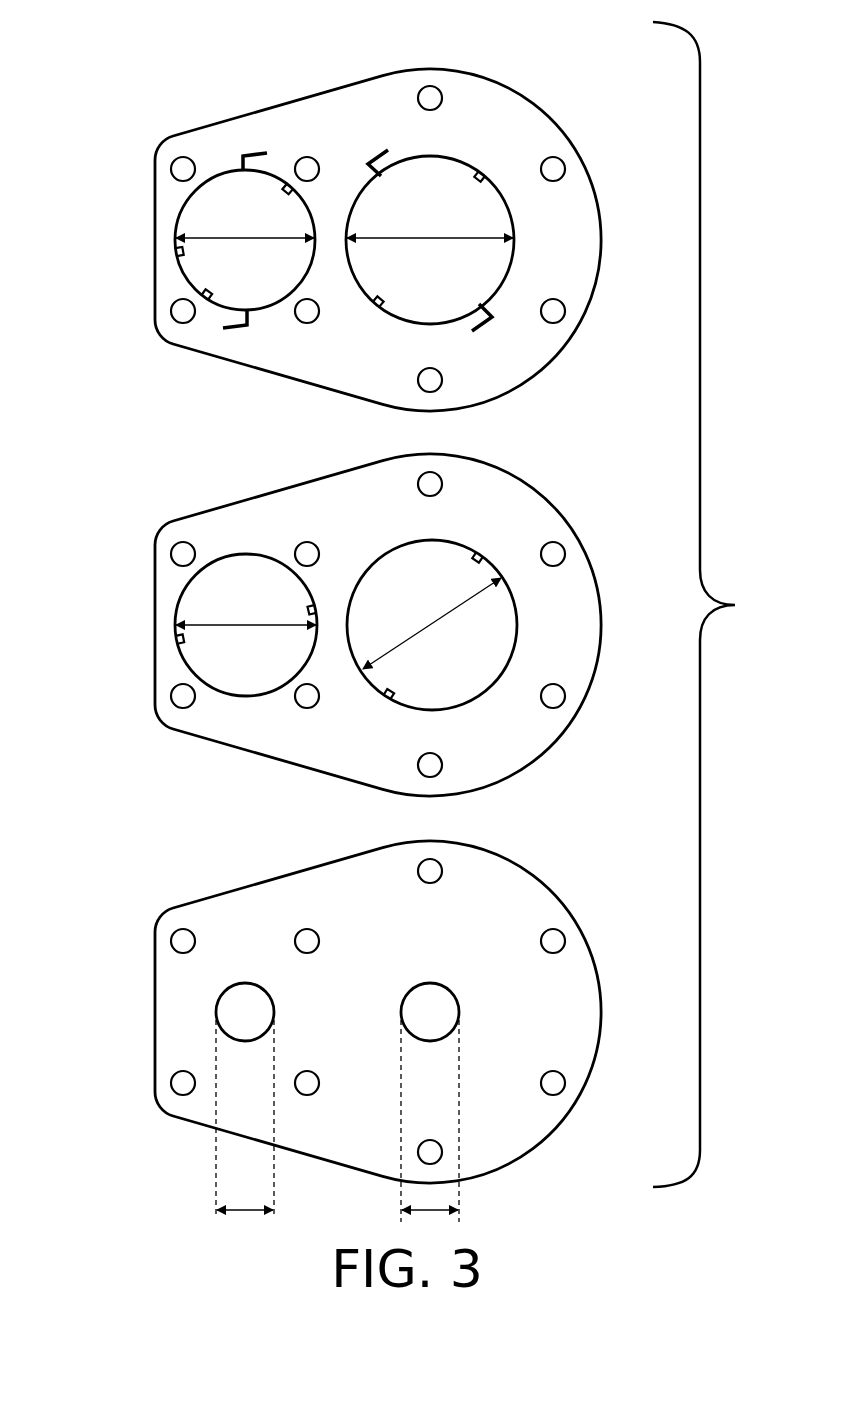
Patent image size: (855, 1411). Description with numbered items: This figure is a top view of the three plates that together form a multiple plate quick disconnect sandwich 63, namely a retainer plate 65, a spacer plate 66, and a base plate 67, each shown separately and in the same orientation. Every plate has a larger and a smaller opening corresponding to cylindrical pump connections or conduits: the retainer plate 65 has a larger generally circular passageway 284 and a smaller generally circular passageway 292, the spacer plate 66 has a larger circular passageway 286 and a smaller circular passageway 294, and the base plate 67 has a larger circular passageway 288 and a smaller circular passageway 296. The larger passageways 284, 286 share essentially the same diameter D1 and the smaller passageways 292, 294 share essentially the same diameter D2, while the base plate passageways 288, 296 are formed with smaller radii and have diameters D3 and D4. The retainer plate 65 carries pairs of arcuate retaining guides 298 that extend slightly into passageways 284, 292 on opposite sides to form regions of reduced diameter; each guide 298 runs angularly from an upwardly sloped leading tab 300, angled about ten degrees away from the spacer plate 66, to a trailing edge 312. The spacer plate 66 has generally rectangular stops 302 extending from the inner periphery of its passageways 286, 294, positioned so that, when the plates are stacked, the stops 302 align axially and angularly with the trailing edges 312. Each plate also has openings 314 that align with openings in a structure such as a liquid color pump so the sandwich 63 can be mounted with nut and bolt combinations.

The multiple plate quick disconnect sandwich 63 is at (735, 605).
The retainer plate 65 is at (540, 130).
The spacer plate 66 is at (537, 533).
The base plate 67 is at (540, 922).
The larger generally circular passageway 284 is at (402, 220).
The larger circular passageway 286 is at (478, 662).
The larger circular passageway 288 is at (432, 1008).
The smaller generally circular passageway 292 is at (228, 197).
The smaller circular passageway 294 is at (215, 608).
The smaller circular passageway 296 is at (245, 1008).
The arcuate retaining guide 298 is at (282, 182).
The sloped leading tab 300 is at (255, 154).
The stop 302 is at (315, 603).
The trailing edge 312 is at (498, 143).
The openings 314 is at (553, 169).